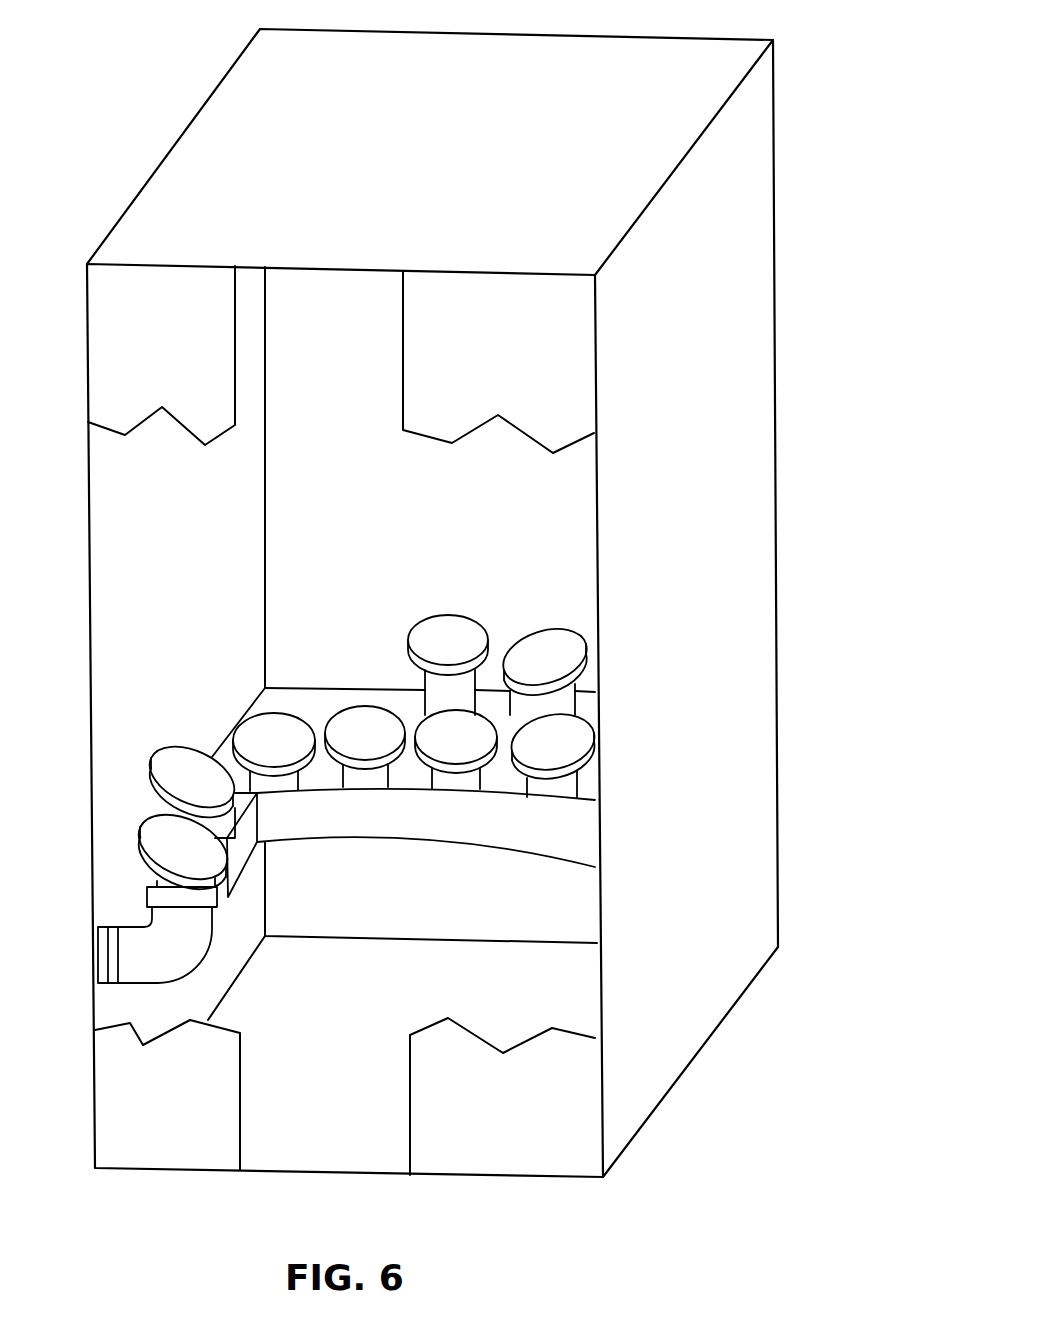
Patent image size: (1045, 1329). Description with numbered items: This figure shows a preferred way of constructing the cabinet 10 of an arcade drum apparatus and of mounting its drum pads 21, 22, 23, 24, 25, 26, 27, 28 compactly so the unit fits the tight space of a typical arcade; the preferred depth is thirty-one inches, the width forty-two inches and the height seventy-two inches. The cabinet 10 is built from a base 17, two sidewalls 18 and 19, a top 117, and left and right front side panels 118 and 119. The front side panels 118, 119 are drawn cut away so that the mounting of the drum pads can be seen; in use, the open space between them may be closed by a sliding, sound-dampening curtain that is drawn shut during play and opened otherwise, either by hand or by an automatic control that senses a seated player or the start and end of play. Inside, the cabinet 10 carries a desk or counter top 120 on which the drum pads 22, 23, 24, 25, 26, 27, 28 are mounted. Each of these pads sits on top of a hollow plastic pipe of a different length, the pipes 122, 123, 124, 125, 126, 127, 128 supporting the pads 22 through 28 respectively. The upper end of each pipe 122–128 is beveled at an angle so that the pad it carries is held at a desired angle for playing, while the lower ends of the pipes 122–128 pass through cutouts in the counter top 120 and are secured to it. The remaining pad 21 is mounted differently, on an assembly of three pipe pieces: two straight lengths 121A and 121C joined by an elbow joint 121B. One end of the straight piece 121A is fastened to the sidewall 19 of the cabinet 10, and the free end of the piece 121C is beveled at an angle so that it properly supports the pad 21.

The cabinet 10 is at (126, 78).
The base 17 is at (353, 1097).
The sidewall 18 is at (684, 613).
The sidewall 19 is at (180, 579).
The top 117 is at (678, 45).
The left front side panel 118 is at (150, 1155).
The right front side panel 119 is at (498, 1165).
The counter top 120 is at (485, 843).
The drum pad 21 is at (168, 857).
The drum pad 22 is at (176, 787).
The drum pad 23 is at (434, 652).
The drum pad 24 is at (534, 669).
The drum pad 25 is at (260, 753).
The drum pad 26 is at (351, 746).
The drum pad 27 is at (442, 750).
The drum pad 28 is at (541, 755).
The straight pipe length 121A is at (105, 985).
The elbow joint 121B is at (202, 963).
The straight pipe length 121C is at (156, 882).
The hollow plastic pipe 122 is at (170, 810).
The hollow plastic pipe 123 is at (428, 703).
The hollow plastic pipe 124 is at (533, 709).
The hollow plastic pipe 125 is at (268, 791).
The hollow plastic pipe 126 is at (376, 790).
The hollow plastic pipe 127 is at (463, 789).
The hollow plastic pipe 128 is at (536, 791).